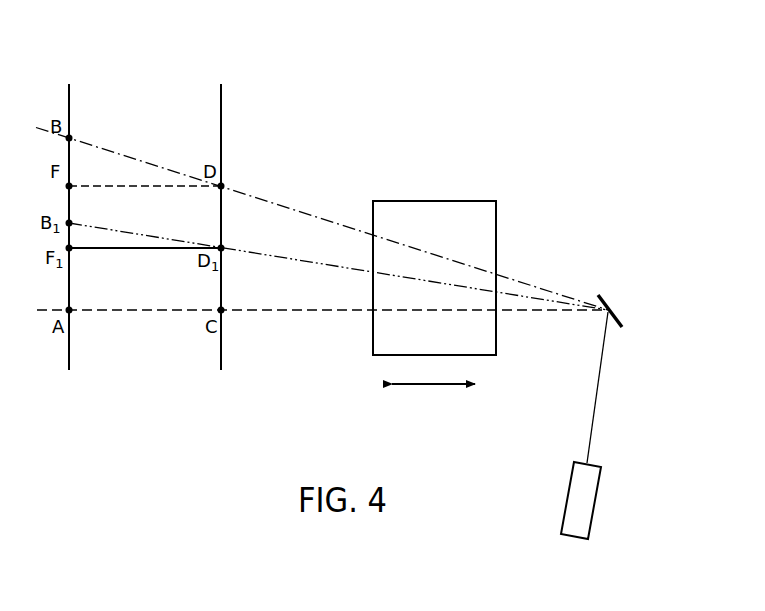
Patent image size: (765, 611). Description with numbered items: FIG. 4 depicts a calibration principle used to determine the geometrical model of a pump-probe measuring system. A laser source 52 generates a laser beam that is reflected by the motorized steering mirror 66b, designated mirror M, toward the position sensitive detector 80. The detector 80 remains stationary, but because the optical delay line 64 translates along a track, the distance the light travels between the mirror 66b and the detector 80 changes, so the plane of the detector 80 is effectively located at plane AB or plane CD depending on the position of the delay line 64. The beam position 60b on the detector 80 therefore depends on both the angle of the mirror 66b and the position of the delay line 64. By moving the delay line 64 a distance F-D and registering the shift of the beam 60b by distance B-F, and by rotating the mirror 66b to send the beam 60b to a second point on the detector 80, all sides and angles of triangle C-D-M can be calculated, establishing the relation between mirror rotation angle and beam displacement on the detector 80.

The position sensitive detector 80 is at (69, 93).
The beam position 60b is at (323, 216).
The optical delay line 64 is at (511, 219).
The motorized steering mirror 66b is at (645, 337).
The laser source 52 is at (592, 527).